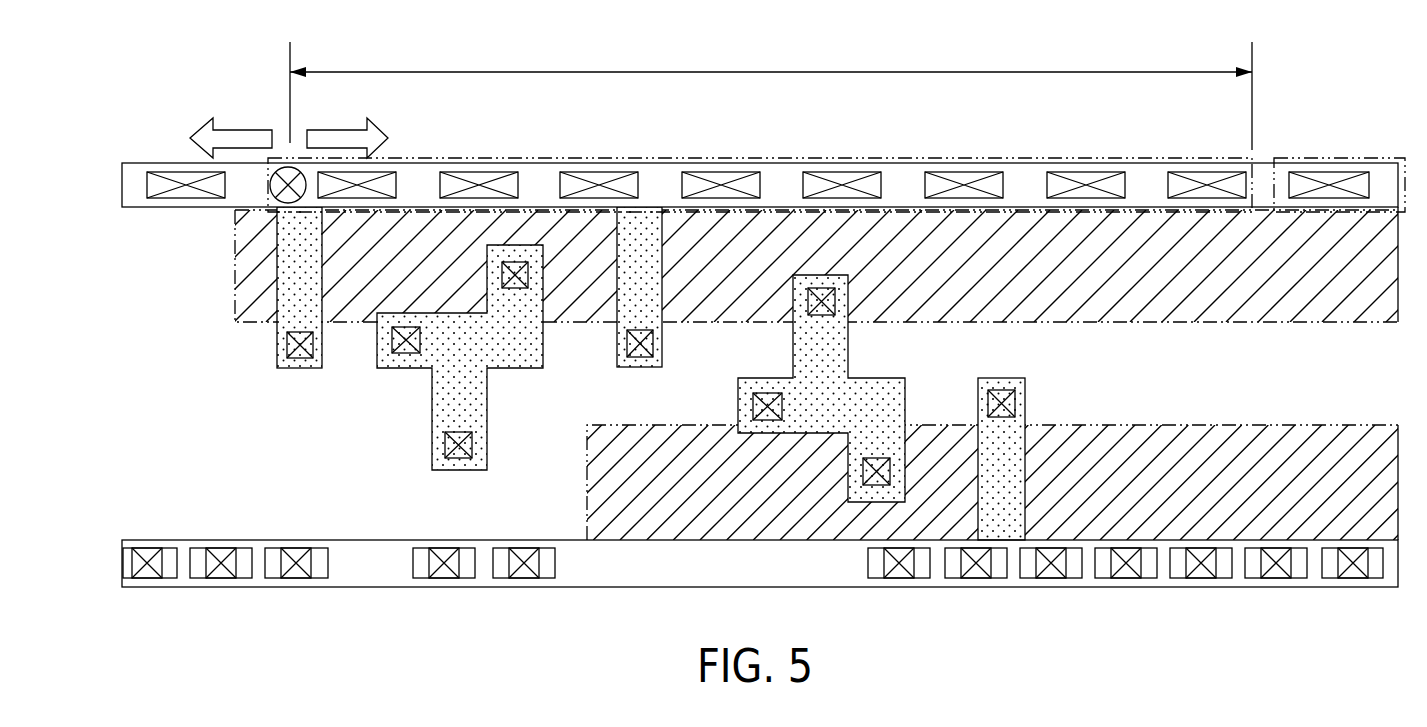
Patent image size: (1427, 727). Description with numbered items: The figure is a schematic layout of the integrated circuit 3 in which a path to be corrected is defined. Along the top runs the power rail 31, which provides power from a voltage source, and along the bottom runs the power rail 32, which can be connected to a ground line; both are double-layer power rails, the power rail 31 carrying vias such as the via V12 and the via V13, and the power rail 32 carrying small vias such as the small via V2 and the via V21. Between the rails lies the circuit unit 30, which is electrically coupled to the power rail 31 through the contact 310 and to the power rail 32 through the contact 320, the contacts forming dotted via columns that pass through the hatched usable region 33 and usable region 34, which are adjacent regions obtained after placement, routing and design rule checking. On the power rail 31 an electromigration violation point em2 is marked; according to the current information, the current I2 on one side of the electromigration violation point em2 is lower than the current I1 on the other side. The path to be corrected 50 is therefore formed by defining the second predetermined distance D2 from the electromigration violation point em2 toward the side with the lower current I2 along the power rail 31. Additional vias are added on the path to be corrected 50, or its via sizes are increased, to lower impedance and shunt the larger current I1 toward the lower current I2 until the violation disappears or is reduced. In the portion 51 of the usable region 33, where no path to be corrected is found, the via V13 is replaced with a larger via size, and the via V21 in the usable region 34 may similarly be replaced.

The integrated circuit 3 is at (1348, 66).
The circuit unit 30 is at (158, 288).
The power rail 31 is at (122, 183).
The power rail 32 is at (122, 563).
The usable region 33 is at (1237, 323).
The usable region 34 is at (1298, 425).
The contact 310 is at (287, 345).
The contact 320 is at (1015, 403).
The path to be corrected 50 is at (1133, 158).
The portion of usable region 51 is at (1338, 158).
The via V12 is at (600, 172).
The via V13 is at (1375, 172).
The small via V2 is at (316, 548).
The via V21 is at (1333, 580).
The electromigration violation point em2 is at (273, 191).
The second predetermined distance D2 is at (771, 92).
The current I1 is at (231, 126).
The current I2 is at (347, 126).